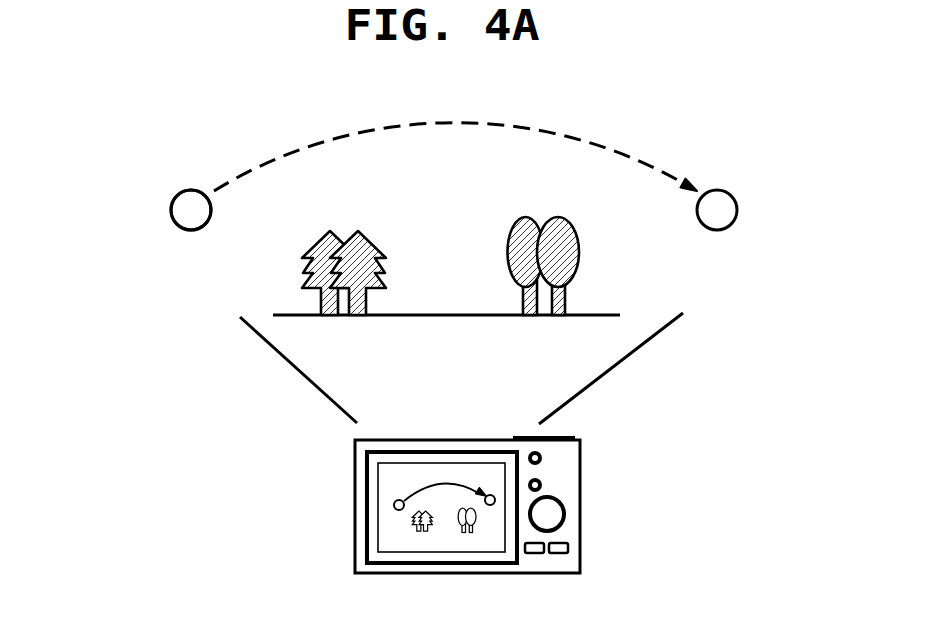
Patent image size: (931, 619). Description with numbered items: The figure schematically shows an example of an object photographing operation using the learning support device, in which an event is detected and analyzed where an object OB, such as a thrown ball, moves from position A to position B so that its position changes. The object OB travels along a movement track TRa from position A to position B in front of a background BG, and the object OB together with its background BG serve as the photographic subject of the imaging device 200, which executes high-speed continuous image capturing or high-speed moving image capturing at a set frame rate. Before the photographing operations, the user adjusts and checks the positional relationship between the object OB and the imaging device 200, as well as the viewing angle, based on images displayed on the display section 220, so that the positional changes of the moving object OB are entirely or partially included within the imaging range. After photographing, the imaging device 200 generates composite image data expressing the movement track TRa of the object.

The object OB is at (183, 191).
The movement track of the object TRa is at (614, 153).
The background BG is at (318, 334).
The imaging device 200 is at (600, 445).
The display section 220 is at (385, 491).
The position A is at (191, 231).
The position B is at (717, 232).